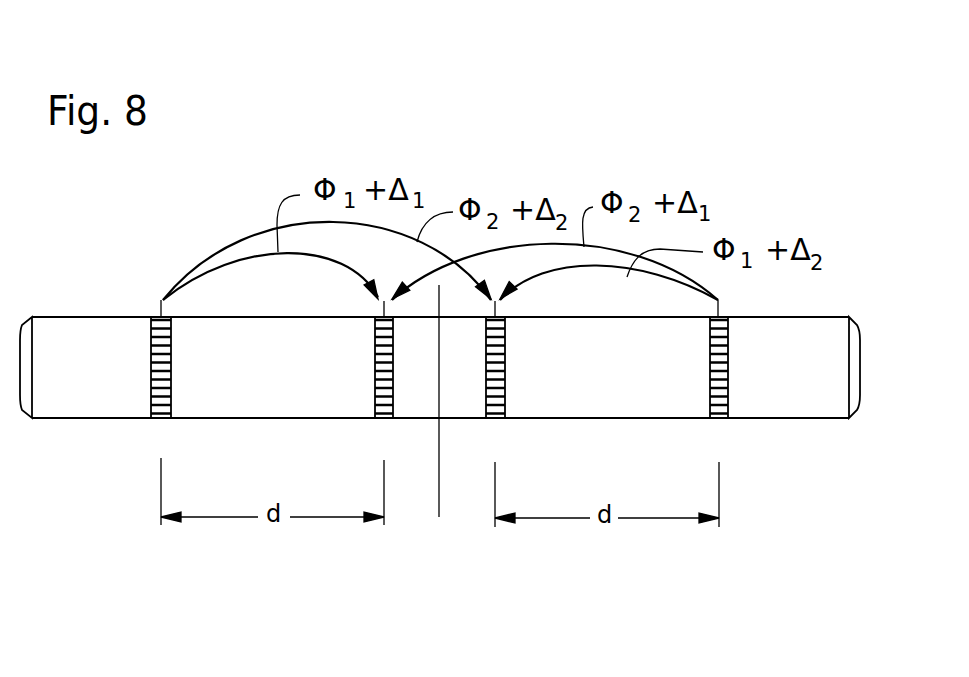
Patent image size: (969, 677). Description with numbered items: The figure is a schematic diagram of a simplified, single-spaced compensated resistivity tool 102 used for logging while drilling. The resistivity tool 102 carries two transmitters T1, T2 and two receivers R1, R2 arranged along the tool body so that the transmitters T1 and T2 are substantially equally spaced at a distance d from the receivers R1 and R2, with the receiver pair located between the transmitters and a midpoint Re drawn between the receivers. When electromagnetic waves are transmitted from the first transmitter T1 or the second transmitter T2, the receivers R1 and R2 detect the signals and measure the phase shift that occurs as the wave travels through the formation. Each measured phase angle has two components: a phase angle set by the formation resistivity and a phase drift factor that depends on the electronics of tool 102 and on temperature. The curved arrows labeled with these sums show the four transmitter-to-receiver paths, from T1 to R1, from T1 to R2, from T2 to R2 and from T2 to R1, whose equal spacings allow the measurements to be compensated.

The resistivity tool 102 is at (190, 552).
The first transmitter T1 is at (167, 378).
The first receiver R1 is at (382, 379).
The second receiver R2 is at (498, 379).
The second transmitter T2 is at (722, 379).
The effective receiver midpoint Re is at (437, 424).